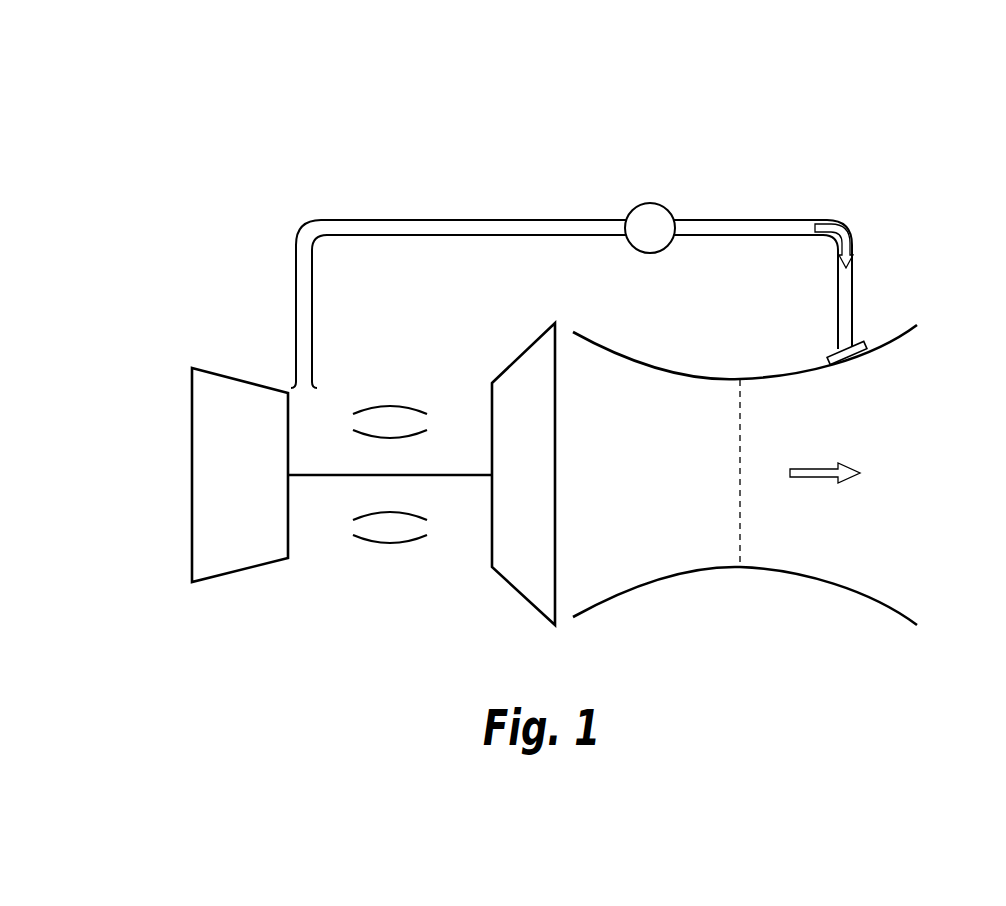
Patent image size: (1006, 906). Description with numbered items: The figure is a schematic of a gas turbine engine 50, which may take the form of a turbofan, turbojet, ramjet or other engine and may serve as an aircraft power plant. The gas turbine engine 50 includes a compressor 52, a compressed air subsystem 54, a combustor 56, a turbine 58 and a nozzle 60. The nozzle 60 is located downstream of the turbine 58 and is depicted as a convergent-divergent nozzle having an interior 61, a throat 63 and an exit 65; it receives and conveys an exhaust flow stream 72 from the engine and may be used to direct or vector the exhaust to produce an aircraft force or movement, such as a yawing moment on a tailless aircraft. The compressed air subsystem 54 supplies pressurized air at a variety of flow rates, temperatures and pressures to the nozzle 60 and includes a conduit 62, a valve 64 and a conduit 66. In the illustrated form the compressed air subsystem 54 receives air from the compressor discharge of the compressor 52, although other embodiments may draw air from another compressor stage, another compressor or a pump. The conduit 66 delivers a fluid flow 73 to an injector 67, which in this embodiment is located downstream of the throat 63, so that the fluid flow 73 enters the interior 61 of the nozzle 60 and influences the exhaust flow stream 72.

The gas turbine engine 50 is at (470, 104).
The compressor 52 is at (225, 373).
The compressed air subsystem 54 is at (633, 115).
The combustor 56 is at (383, 404).
The turbine 58 is at (516, 358).
The nozzle 60 is at (832, 584).
The interior 61 is at (648, 477).
The conduit 62 is at (390, 220).
The throat 63 is at (740, 528).
The valve 64 is at (631, 208).
The exit 65 is at (905, 432).
The conduit 66 is at (740, 220).
The injector 67 is at (832, 355).
The exhaust flow stream 72 is at (808, 470).
The fluid flow 73 is at (849, 233).